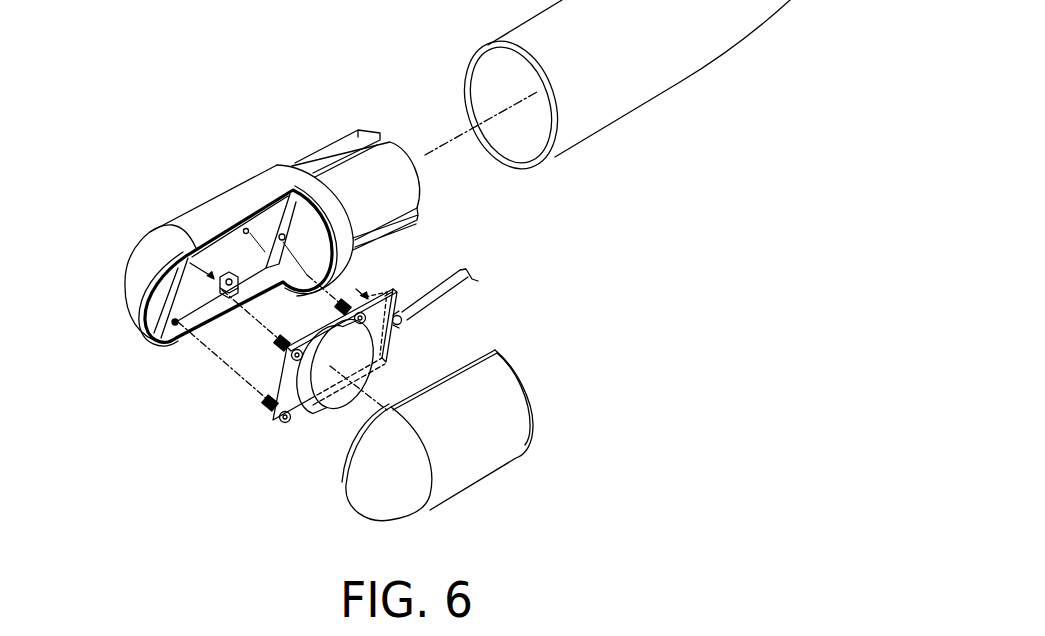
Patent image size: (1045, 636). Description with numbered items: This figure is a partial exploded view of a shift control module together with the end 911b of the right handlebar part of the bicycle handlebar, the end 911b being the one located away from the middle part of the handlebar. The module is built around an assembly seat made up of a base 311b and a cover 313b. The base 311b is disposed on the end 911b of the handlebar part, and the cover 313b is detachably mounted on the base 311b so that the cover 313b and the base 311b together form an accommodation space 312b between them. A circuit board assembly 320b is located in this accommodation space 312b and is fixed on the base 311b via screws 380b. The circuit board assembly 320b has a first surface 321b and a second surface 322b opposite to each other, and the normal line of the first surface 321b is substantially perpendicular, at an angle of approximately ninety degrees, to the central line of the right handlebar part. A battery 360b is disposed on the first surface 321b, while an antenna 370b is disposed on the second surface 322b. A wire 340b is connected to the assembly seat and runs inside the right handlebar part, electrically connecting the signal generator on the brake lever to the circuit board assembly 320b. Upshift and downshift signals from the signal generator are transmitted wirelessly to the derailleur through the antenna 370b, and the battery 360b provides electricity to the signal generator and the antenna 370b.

The base 311b is at (242, 192).
The accommodation space 312b is at (222, 291).
The cover 313b is at (473, 461).
The circuit board assembly 320b is at (278, 378).
The first surface 321b is at (397, 364).
The second surface 322b is at (362, 284).
The wire 340b is at (478, 281).
The battery 360b is at (326, 398).
The antenna 370b is at (400, 327).
The screws 380b is at (294, 358).
The end 911b is at (632, 93).